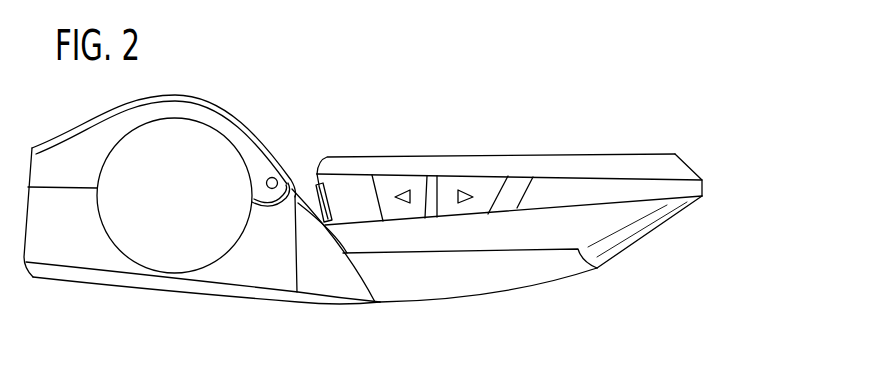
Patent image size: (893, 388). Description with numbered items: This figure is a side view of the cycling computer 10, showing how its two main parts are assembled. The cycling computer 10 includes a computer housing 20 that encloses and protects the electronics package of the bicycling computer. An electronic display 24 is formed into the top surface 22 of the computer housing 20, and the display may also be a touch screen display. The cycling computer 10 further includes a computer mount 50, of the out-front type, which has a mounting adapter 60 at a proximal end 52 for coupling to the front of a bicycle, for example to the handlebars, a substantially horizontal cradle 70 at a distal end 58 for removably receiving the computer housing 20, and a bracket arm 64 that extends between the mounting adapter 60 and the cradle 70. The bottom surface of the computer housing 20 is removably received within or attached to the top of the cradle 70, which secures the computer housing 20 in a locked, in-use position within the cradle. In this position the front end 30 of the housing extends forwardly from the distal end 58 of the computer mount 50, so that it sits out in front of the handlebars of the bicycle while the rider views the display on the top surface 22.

The cycling computer 10 is at (587, 63).
The computer housing 20 is at (662, 122).
The top surface 22 is at (445, 156).
The electronic display 24 is at (540, 153).
The front end 30 is at (723, 170).
The computer mount 50 is at (252, 108).
The proximal end 52 is at (43, 293).
The distal end 58 is at (597, 280).
The mounting adapter 60 is at (93, 124).
The bracket arm 64 is at (327, 273).
The cradle 70 is at (453, 280).